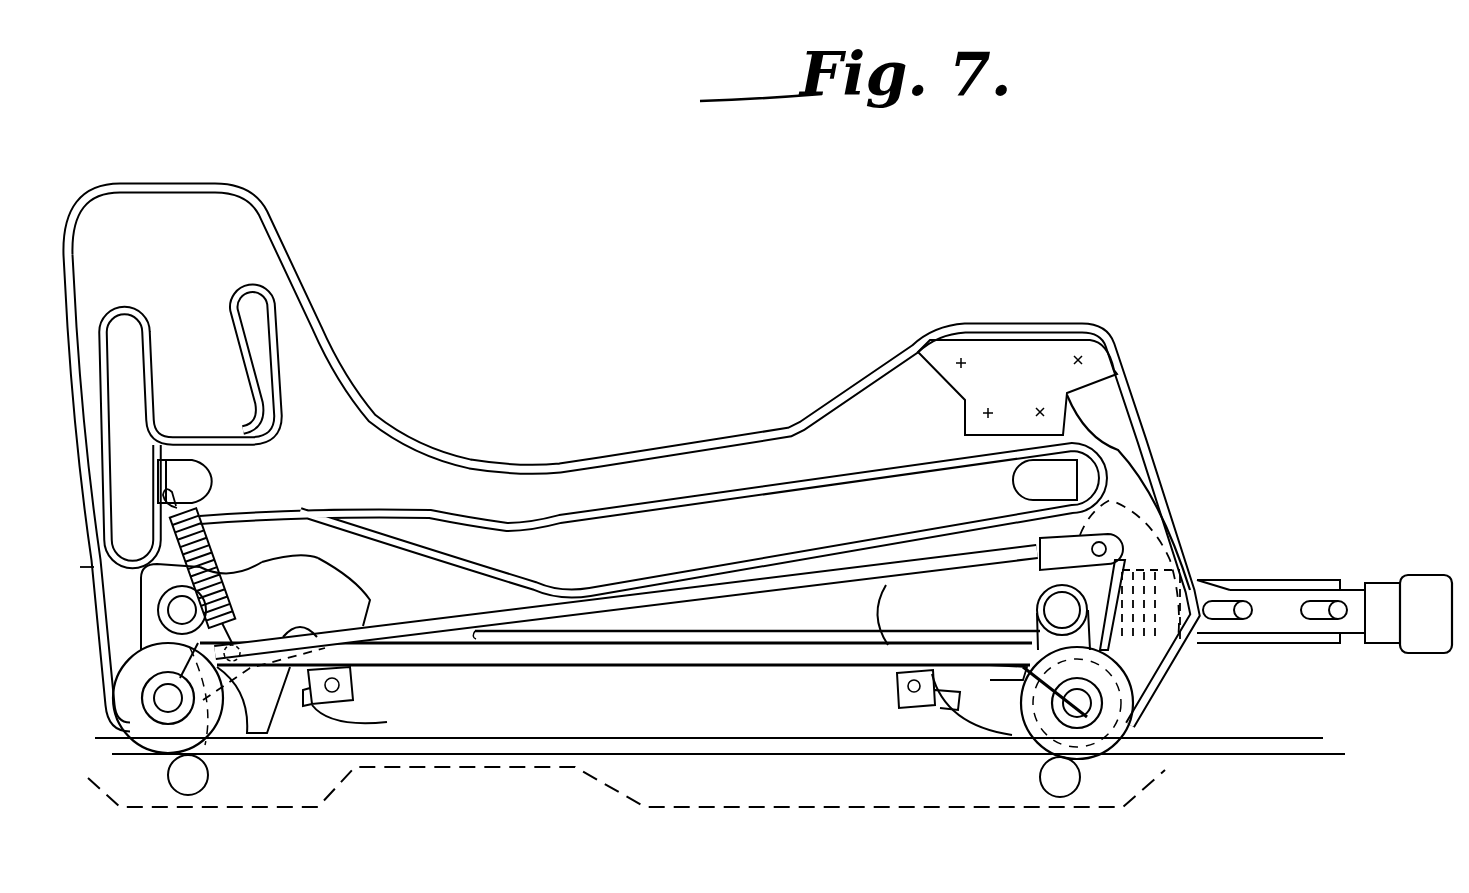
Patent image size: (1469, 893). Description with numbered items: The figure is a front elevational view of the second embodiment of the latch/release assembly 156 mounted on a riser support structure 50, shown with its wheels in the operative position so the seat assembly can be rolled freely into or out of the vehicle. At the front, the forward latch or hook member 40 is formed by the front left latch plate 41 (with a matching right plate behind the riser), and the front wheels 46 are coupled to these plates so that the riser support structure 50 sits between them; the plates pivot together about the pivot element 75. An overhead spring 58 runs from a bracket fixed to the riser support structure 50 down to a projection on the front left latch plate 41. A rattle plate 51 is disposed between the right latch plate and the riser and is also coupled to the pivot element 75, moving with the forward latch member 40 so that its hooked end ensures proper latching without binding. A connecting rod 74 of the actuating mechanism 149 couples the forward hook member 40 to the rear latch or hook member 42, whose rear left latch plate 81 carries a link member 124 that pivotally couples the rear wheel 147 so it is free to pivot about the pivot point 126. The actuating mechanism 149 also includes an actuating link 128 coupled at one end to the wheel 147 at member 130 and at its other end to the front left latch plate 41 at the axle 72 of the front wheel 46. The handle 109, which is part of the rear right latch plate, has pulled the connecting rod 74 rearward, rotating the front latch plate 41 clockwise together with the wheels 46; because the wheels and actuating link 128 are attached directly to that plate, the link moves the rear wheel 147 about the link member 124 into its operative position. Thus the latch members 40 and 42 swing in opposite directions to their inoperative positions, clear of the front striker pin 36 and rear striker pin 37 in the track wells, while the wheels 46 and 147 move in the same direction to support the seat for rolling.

The riser support structure 50 is at (312, 300).
The overhead spring 58 is at (225, 520).
The pivot element 75 is at (222, 593).
The front left latch plate 41 is at (328, 580).
The forward latch or hook member 40 is at (341, 602).
The front wheel members or wheels 46 is at (142, 572).
The axle of wheel 72 is at (168, 712).
The striker pin 36 is at (208, 779).
The rattle plate 51 is at (382, 680).
The actuating link 128 is at (535, 660).
The connecting rod 74 is at (652, 603).
The rear left latch plate 81 is at (855, 662).
The rear latch or hook member 42 is at (914, 612).
The link member 124 is at (1020, 650).
The pivot point 126 is at (1040, 600).
The member 130 is at (1083, 707).
The striker pin 37 is at (1072, 795).
The wheel 147 is at (1268, 698).
The handle 109 is at (1397, 580).
The actuating mechanism 149 is at (1418, 591).
The latch/release assembly 156 is at (1325, 670).